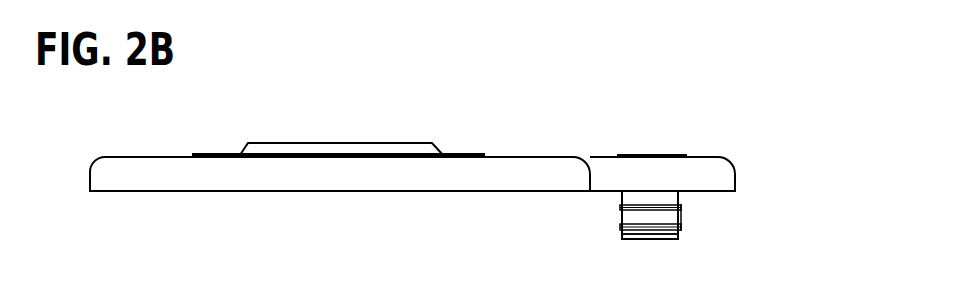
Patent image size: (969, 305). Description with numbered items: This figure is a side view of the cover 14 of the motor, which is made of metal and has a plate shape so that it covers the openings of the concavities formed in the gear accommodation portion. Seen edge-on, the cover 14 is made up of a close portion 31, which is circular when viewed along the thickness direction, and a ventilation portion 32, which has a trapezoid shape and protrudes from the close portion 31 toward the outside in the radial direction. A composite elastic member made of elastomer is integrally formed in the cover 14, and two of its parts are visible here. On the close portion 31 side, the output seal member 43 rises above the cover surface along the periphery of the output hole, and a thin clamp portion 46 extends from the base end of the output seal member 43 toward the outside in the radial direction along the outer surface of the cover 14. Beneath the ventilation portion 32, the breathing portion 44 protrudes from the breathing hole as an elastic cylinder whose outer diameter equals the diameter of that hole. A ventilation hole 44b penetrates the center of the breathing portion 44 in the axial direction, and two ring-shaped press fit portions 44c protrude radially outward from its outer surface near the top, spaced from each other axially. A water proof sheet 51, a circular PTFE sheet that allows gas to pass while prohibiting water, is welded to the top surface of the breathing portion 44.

The cover 14 is at (540, 156).
The close portion 31 is at (150, 157).
The ventilation portion 32 is at (708, 157).
The output seal member 43 is at (416, 143).
The clamp portion 46 is at (470, 153).
The breathing portion 44 is at (630, 216).
The ventilation hole 44b is at (635, 240).
The press fit portions 44c is at (683, 205).
The water proof sheet 51 is at (663, 240).